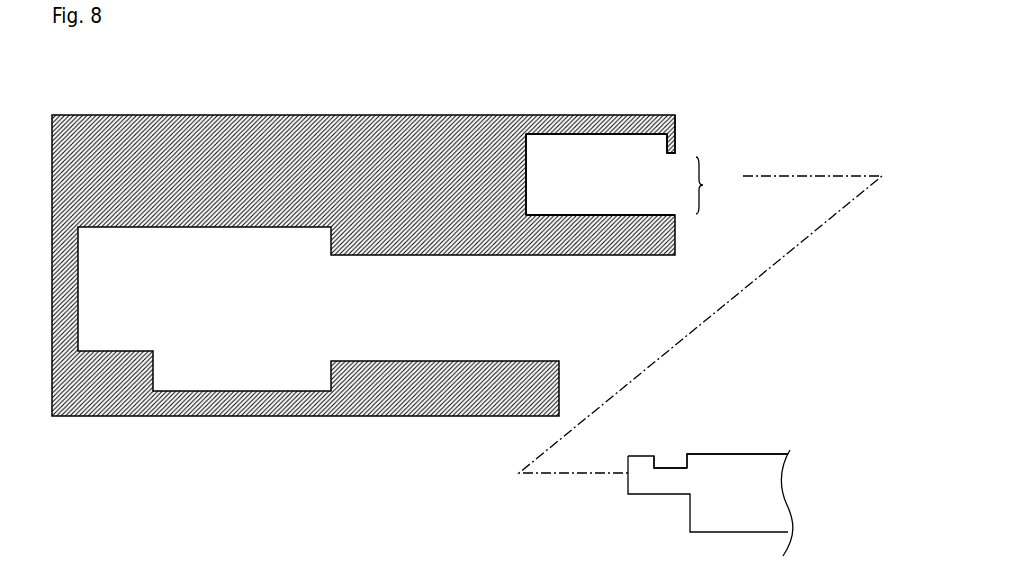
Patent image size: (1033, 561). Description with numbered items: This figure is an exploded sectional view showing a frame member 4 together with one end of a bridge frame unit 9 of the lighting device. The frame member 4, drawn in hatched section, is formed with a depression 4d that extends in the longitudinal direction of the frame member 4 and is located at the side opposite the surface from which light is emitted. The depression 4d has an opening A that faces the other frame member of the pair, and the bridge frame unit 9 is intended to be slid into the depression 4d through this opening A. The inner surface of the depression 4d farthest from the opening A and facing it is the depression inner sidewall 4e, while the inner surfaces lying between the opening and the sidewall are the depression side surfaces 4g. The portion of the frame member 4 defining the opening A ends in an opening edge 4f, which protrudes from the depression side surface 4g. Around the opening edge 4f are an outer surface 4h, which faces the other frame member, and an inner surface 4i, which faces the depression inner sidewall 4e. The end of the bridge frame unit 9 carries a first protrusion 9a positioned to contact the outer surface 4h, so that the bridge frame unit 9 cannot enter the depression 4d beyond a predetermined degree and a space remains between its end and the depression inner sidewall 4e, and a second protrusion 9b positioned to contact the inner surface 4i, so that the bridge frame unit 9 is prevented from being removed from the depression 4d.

The frame member 4 is at (567, 94).
The depression 4d is at (600, 174).
The depression inner sidewall 4e is at (527, 158).
The opening edge 4f is at (681, 160).
The depression side surface 4g is at (566, 136).
The outer surface of the opening edge 4h is at (675, 143).
The inner surface of the opening edge 4i is at (660, 153).
The opening A is at (706, 185).
The bridge frame unit 9 is at (751, 448).
The first protrusion 9a is at (687, 458).
The second protrusion 9b is at (658, 457).